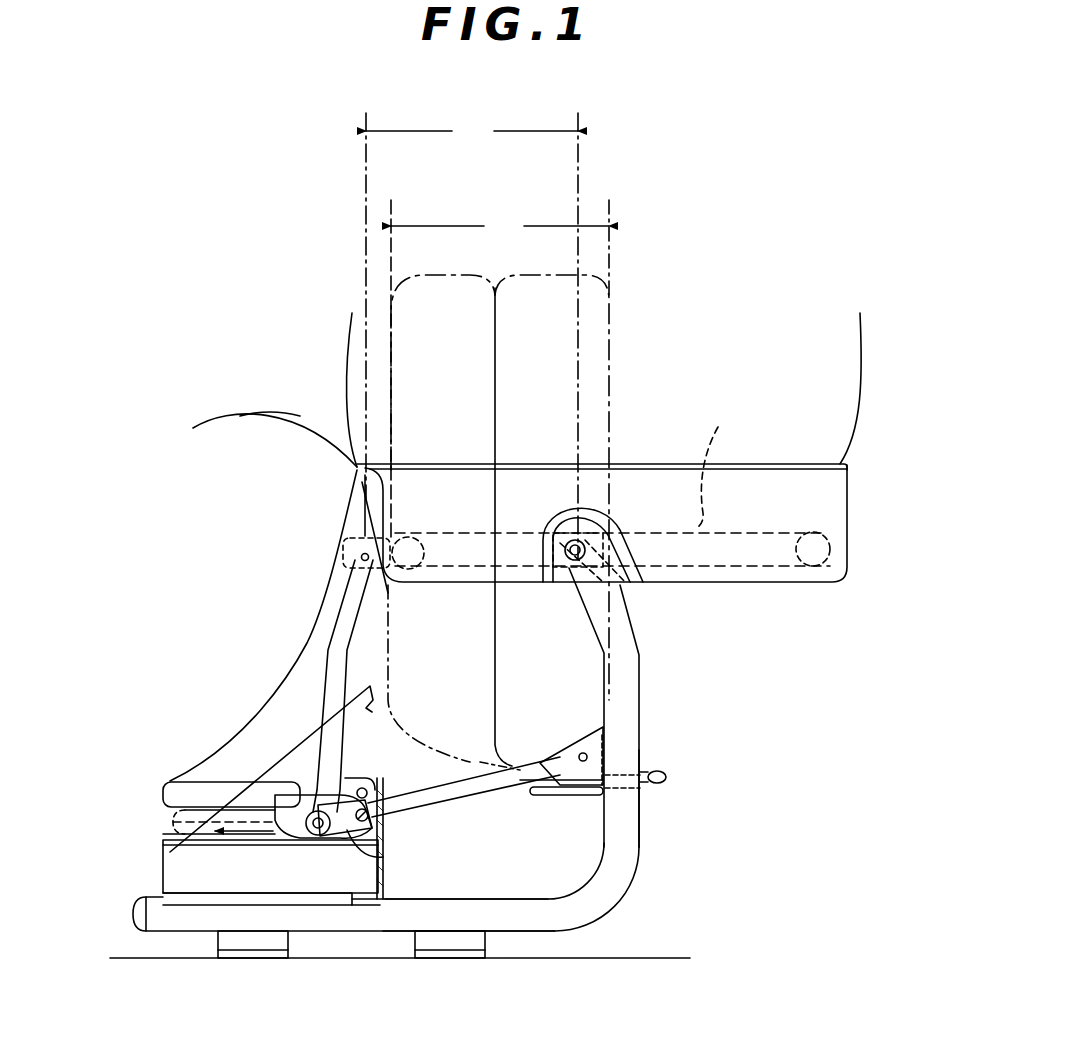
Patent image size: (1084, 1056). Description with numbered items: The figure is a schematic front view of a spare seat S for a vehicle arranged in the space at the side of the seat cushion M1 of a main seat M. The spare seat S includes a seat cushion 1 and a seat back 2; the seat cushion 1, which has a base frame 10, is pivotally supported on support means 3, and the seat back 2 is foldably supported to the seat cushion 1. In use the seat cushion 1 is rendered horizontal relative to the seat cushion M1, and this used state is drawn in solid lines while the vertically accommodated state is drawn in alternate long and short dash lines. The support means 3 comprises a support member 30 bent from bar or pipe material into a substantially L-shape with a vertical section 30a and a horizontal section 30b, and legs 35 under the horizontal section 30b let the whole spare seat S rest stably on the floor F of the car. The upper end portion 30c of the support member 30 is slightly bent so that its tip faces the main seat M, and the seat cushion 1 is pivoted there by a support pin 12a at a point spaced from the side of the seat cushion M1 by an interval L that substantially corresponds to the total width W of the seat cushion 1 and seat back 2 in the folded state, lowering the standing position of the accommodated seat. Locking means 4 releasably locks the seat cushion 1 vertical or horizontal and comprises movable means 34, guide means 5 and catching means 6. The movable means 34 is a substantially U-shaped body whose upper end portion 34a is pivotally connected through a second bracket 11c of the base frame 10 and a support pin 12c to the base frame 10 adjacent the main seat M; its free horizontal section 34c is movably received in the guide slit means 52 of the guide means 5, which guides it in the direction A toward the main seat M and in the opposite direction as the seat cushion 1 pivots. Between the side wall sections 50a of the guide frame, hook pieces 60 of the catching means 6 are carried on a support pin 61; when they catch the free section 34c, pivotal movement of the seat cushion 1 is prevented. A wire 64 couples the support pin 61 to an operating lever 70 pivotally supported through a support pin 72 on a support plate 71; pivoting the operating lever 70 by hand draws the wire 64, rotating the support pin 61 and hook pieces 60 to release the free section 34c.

The seat cushion 1 is at (597, 320).
The seat back 2 is at (407, 322).
The support means 3 is at (648, 740).
The locking means 4 is at (270, 778).
The guide means 5 is at (167, 782).
The catching means 6 is at (297, 828).
The base frame 10 is at (713, 459).
The second bracket 11c is at (350, 528).
The support pin 12a is at (567, 570).
The support pin 12c is at (348, 558).
The support member 30 is at (648, 702).
The vertical section 30a is at (641, 833).
The horizontal section 30b is at (393, 933).
The upper end portion 30c is at (625, 605).
The movable means 34 is at (300, 727).
The upper end portion 34a is at (362, 607).
The free horizontal section 34c is at (175, 847).
The legs 35 is at (252, 940).
The side wall section 50a is at (215, 878).
The guide slit means 52 is at (172, 842).
The hook piece 60 is at (330, 835).
The support pin 61 is at (375, 825).
The wire 64 is at (492, 790).
The operating lever 70 is at (553, 763).
The support plate 71 is at (558, 791).
The support pin 72 is at (590, 745).
The direction A is at (244, 817).
The floor F is at (645, 957).
The interval L is at (472, 336).
The main seat M is at (210, 424).
The seat cushion of the main seat M1 is at (255, 442).
The spare seat S is at (863, 463).
The total width W is at (500, 369).